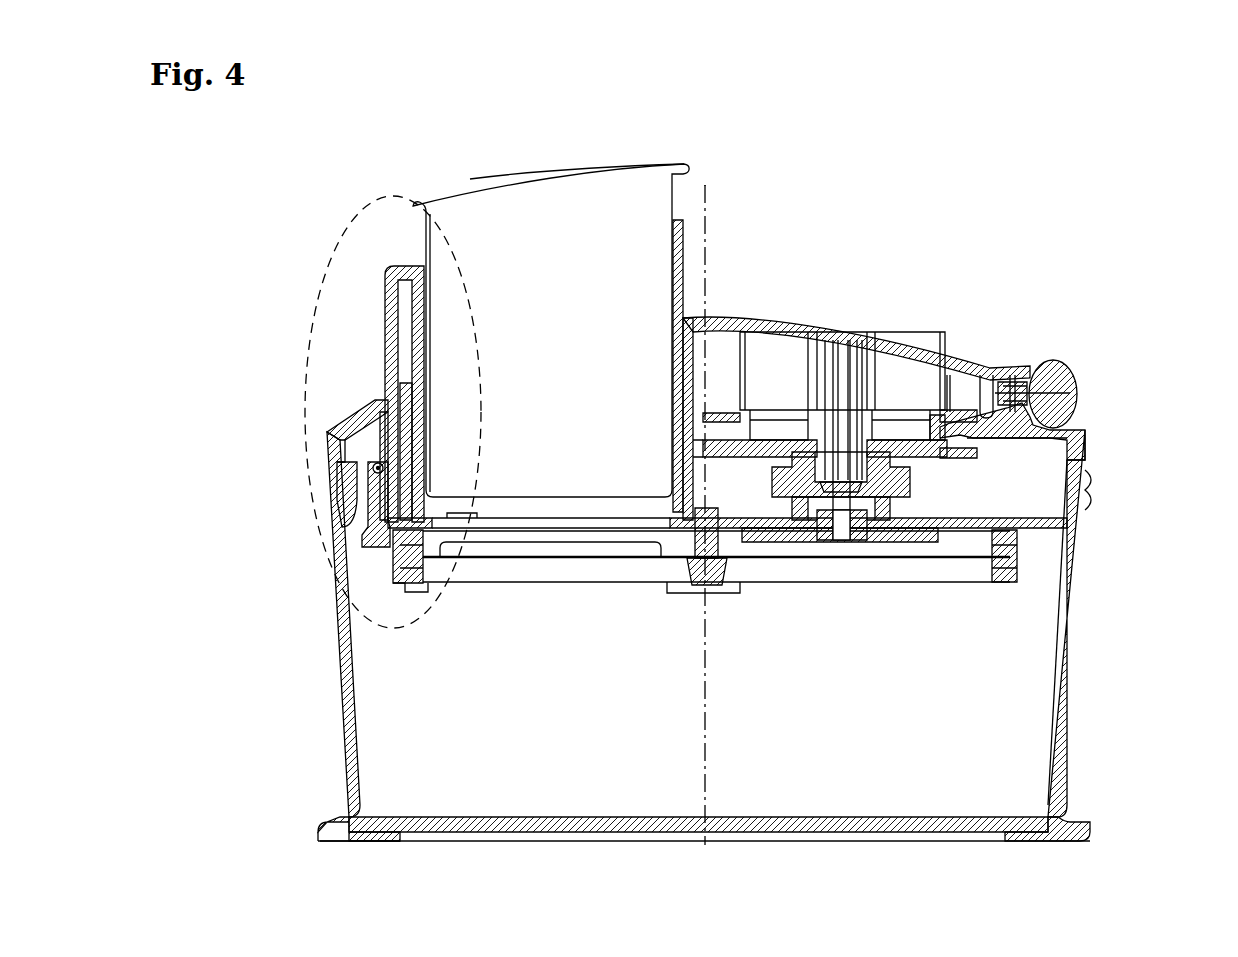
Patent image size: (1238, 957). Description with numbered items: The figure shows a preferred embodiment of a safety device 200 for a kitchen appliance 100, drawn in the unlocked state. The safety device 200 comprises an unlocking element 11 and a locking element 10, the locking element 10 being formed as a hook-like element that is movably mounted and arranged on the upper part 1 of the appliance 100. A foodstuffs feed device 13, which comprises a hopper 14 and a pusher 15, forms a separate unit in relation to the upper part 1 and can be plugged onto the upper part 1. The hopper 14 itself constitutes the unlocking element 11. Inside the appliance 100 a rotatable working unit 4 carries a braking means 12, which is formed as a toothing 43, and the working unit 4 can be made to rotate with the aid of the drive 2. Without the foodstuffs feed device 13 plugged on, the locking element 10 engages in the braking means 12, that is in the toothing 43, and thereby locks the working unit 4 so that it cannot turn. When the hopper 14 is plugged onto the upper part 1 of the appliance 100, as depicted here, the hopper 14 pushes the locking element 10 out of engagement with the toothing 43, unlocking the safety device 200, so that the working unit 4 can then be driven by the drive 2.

The appliance 100 is at (885, 156).
The safety device 200 is at (336, 241).
The upper part 1 is at (895, 337).
The drive 2 is at (1083, 372).
The working unit 4 is at (945, 590).
The locking element 10 is at (360, 523).
The unlocking element 11 is at (383, 335).
The hopper 14 is at (274, 381).
The braking means 12 is at (392, 537).
The toothing 43 is at (269, 586).
The foodstuffs feed device 13 is at (606, 142).
The pusher 15 is at (540, 175).